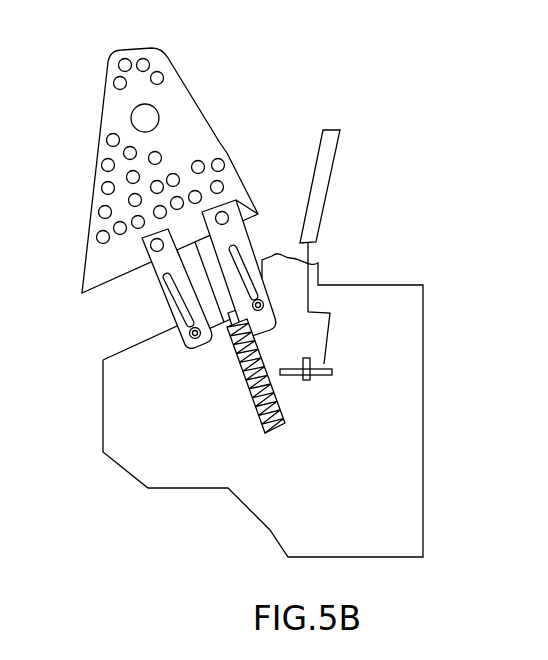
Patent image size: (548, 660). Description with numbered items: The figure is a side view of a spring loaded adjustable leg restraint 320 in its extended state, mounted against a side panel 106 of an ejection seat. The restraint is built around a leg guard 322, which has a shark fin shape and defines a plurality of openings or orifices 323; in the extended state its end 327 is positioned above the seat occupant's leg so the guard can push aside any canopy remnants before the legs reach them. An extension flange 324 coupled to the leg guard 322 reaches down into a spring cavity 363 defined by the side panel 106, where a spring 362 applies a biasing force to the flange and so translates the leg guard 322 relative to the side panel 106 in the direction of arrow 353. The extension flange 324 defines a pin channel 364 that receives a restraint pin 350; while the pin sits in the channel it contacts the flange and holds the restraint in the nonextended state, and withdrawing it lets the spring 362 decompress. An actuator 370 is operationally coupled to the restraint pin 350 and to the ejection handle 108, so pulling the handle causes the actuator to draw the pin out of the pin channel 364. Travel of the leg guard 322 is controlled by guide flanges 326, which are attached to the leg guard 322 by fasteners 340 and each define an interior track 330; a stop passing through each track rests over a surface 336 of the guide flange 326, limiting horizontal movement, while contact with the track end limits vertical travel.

The side panel 106 is at (338, 492).
The ejection handle 108 is at (325, 168).
The adjustable leg restraint 320 is at (93, 110).
The leg guard 322 is at (186, 98).
The openings or orifices 323 is at (164, 74).
The extension flange 324 is at (205, 262).
The guide flange 326 is at (232, 210).
The end 327 is at (139, 47).
The interior track 330 is at (248, 262).
The surface 336 is at (150, 267).
The fastener 340 is at (151, 246).
The restraint pin 350 is at (333, 373).
The arrow 353 is at (45, 128).
The spring 362 is at (252, 410).
The spring cavity 363 is at (232, 373).
The pin channel 364 is at (243, 320).
The actuator 370 is at (333, 331).